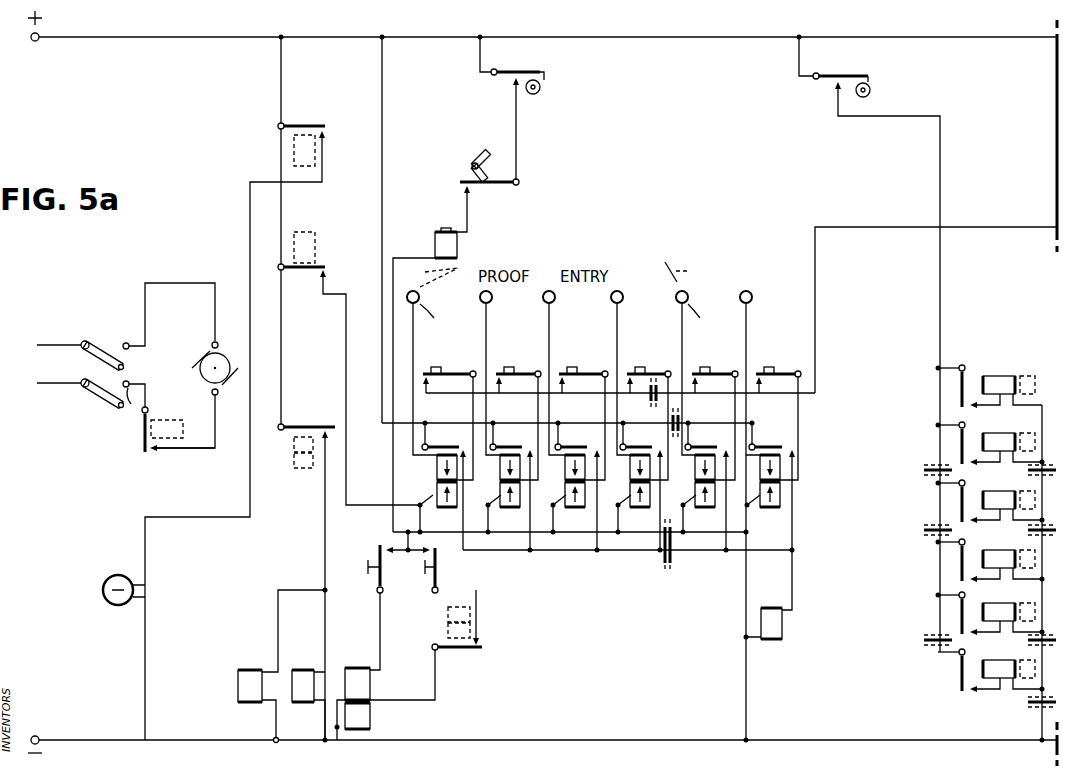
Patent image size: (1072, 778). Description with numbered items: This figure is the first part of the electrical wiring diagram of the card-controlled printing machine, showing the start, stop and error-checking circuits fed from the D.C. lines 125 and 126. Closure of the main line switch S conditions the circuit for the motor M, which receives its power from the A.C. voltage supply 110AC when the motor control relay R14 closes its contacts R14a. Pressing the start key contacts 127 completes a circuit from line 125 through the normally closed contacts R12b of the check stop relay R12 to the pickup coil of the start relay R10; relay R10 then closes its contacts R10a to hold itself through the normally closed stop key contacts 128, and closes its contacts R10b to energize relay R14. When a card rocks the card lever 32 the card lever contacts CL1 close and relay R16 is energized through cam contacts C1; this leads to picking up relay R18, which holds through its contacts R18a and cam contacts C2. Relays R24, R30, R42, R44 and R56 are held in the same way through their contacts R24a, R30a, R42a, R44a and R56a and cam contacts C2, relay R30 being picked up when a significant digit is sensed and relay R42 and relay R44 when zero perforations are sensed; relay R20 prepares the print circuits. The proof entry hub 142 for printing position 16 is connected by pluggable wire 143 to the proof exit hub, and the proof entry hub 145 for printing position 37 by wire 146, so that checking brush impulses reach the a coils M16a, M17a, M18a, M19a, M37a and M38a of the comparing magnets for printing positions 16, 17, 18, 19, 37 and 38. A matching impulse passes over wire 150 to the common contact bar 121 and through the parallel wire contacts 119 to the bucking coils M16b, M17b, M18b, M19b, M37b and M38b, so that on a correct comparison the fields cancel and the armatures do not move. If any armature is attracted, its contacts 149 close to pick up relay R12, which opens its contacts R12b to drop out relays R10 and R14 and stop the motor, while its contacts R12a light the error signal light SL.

The line 125 is at (115, 37).
The line 126 is at (222, 740).
The wire 150 is at (982, 228).
The cam contacts C1 is at (550, 73).
The cam contacts C2 is at (872, 80).
The card lever contacts CL1 is at (458, 184).
The card lever 32 is at (469, 165).
The relay R16 is at (460, 246).
The relay contacts R12a is at (330, 128).
The check stop relay R12 is at (805, 630).
The relay contacts R12b is at (320, 278).
The relay contacts R10b is at (332, 428).
The start relay R10 is at (448, 621).
The relay contacts R10a is at (481, 644).
The A.C. voltage supply 110AC is at (73, 374).
The main line switch S is at (170, 367).
The motor control relay R14 is at (181, 405).
The relay contacts R14a is at (148, 453).
The motor M is at (216, 354).
The error signal light SL is at (105, 586).
The relay R20 is at (238, 678).
The start key contacts 127 is at (384, 542).
The stop key contacts 128 is at (436, 553).
The common contact bar 121 is at (604, 393).
The pluggable wire 143 is at (428, 275).
The proof entry hub 142 is at (440, 318).
The wire 146 is at (692, 271).
The proof entry hub 145 is at (708, 318).
The wire contacts 119 is at (456, 366).
The contacts 149 is at (444, 486).
The printing position 16 is at (425, 372).
The printing position 17 is at (498, 372).
The printing position 18 is at (561, 372).
The printing position 19 is at (629, 372).
The printing position 37 is at (694, 372).
The printing position 38 is at (759, 516).
The comparing relay magnet coil M16a is at (437, 475).
The comparing relay magnet coil M16b is at (443, 508).
The comparing relay magnet coil M17a is at (518, 441).
The comparing relay magnet coil M17b is at (508, 508).
The comparing relay magnet coil M18a is at (583, 441).
The comparing relay magnet coil M18b is at (573, 508).
The comparing relay magnet coil M19a is at (648, 441).
The comparing relay magnet coil M19b is at (638, 508).
The comparing relay magnet coil M37a is at (713, 441).
The comparing relay magnet coil M37b is at (703, 508).
The comparing relay magnet coil M38a is at (778, 441).
The comparing relay magnet coil M38b is at (768, 505).
The relay R18 is at (1010, 368).
The relay contacts R18a is at (968, 405).
The relay R24 is at (1010, 425).
The relay contacts R24a is at (965, 462).
The relay R30 is at (1010, 483).
The relay contacts R30a is at (965, 520).
The control relay R42 is at (1010, 542).
The relay contacts R42a is at (970, 579).
The control relay R44 is at (1010, 595).
The relay contacts R44a is at (970, 632).
The relay R56 is at (1010, 652).
The relay contacts R56a is at (965, 692).